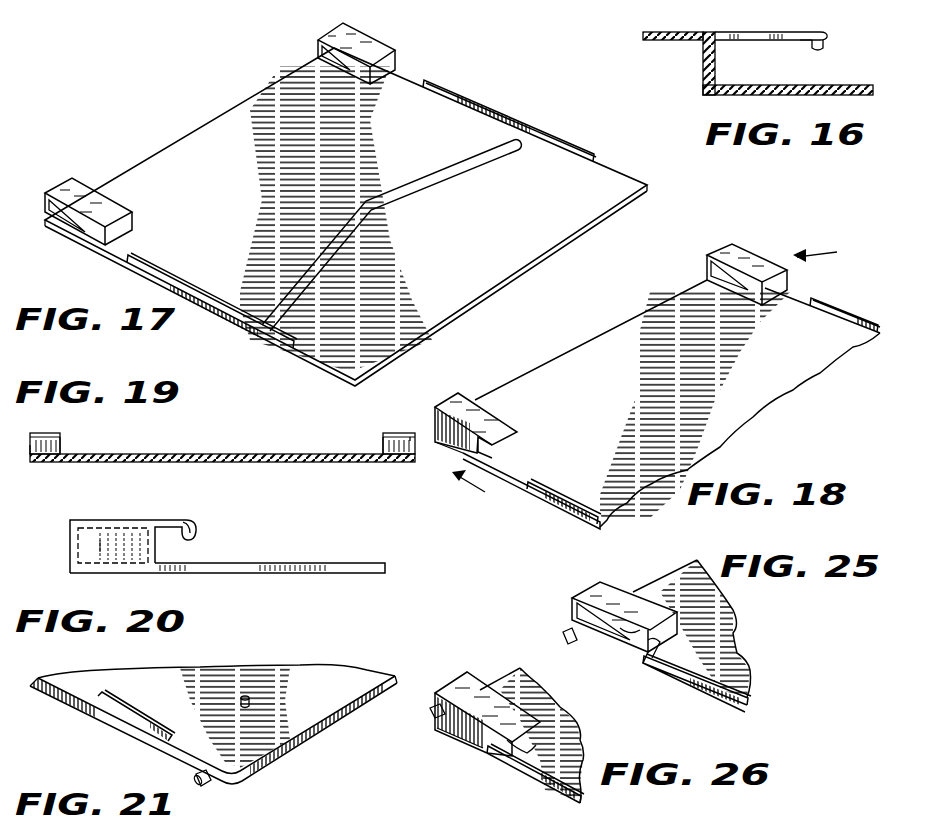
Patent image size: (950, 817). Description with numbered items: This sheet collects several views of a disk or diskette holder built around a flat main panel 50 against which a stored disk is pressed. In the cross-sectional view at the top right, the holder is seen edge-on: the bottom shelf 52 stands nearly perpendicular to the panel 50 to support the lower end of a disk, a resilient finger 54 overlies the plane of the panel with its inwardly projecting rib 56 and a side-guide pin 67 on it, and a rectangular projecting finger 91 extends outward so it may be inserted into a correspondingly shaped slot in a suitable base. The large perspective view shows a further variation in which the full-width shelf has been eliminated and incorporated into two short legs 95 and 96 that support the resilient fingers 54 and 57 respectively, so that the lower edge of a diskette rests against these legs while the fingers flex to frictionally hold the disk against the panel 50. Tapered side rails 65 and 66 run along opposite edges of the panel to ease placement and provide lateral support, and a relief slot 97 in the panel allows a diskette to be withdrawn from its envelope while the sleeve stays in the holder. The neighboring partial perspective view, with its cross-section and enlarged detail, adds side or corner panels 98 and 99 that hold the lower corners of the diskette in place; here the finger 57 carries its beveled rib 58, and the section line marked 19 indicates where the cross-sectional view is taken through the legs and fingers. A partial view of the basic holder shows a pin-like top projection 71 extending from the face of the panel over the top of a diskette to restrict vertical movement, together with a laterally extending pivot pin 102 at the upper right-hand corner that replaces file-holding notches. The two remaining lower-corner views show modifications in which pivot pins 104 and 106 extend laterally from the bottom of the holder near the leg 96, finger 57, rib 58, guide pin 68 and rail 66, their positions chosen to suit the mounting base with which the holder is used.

In FIG. 18, the section line of FIG. 19 is at (654, 378).
In FIG. 16, the main panel 50 is at (838, 85).
In FIG. 17, the main panel 50 is at (225, 130).
In FIG. 18, the main panel 50 is at (628, 335).
In FIG. 19, the main panel 50 is at (250, 455).
In FIG. 20, the main panel 50 is at (226, 565).
In FIG. 21, the main panel 50 is at (350, 677).
In FIG. 25, the main panel 50 is at (745, 664).
In FIG. 26, the main panel 50 is at (578, 745).
In FIG. 16, the shelf 52 is at (700, 70).
In FIG. 16, the resilient finger 54 is at (797, 32).
In FIG. 17, the resilient finger 54 is at (385, 46).
In FIG. 18, the resilient finger 54 is at (765, 272).
In FIG. 19, the resilient finger 54 is at (388, 433).
In FIG. 16, the rib 56 is at (807, 46).
In FIG. 17, the resilient finger 57 is at (80, 195).
In FIG. 18, the resilient finger 57 is at (495, 421).
In FIG. 19, the resilient finger 57 is at (50, 433).
In FIG. 20, the resilient finger 57 is at (140, 523).
In FIG. 25, the resilient finger 57 is at (625, 600).
In FIG. 26, the resilient finger 57 is at (480, 690).
In FIG. 20, the rib 58 is at (196, 535).
In FIG. 25, the rib 58 is at (678, 628).
In FIG. 26, the rib 58 is at (528, 753).
In FIG. 17, the side rail 65 is at (482, 103).
In FIG. 18, the side rail 65 is at (850, 322).
In FIG. 17, the side rail 66 is at (232, 298).
In FIG. 18, the side rail 66 is at (582, 490).
In FIG. 21, the side rail 66 is at (165, 738).
In FIG. 25, the side rail 66 is at (735, 683).
In FIG. 26, the side rail 66 is at (535, 773).
In FIG. 16, the pin 67 is at (826, 46).
In FIG. 25, the pin 68 is at (650, 660).
In FIG. 21, the top projection 71 is at (250, 703).
In FIG. 16, the rectangular projecting finger 91 is at (676, 42).
In FIG. 17, the leg 95 is at (318, 48).
In FIG. 19, the leg 95 is at (383, 446).
In FIG. 17, the leg 96 is at (45, 206).
In FIG. 19, the leg 96 is at (62, 446).
In FIG. 20, the leg 96 is at (70, 556).
In FIG. 25, the leg 96 is at (572, 606).
In FIG. 17, the relief slot 97 is at (357, 238).
In FIG. 19, the corner panel 98 is at (413, 433).
In FIG. 18, the corner panel 99 is at (453, 437).
In FIG. 19, the corner panel 99 is at (30, 450).
In FIG. 20, the corner panel 99 is at (103, 546).
In FIG. 26, the corner panel 99 is at (472, 735).
In FIG. 21, the pivot pin 102 is at (206, 784).
In FIG. 25, the pivot pin 104 is at (572, 644).
In FIG. 26, the pivot pin 106 is at (430, 712).